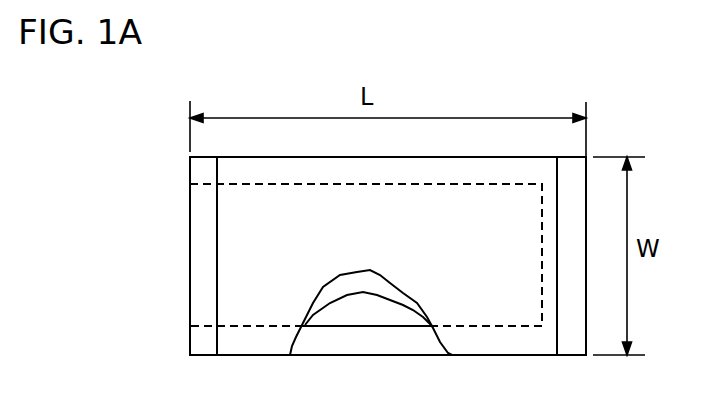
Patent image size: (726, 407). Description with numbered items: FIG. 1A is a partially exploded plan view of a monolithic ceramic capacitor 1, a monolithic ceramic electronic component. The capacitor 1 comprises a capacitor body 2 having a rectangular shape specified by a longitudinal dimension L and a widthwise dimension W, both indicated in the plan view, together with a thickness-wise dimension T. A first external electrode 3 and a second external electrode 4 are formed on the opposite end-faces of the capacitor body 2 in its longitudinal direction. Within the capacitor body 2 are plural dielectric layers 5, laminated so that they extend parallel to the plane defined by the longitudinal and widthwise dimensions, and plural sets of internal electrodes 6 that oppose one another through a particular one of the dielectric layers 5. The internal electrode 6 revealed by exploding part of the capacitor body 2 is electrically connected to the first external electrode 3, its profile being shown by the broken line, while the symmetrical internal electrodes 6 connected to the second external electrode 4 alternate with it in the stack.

The monolithic ceramic capacitor 1 is at (140, 188).
The capacitor body 2 is at (491, 157).
The first external electrode 3 is at (200, 268).
The second external electrode 4 is at (573, 208).
The dielectric layer 5 is at (330, 302).
The internal electrode 6 is at (402, 322).